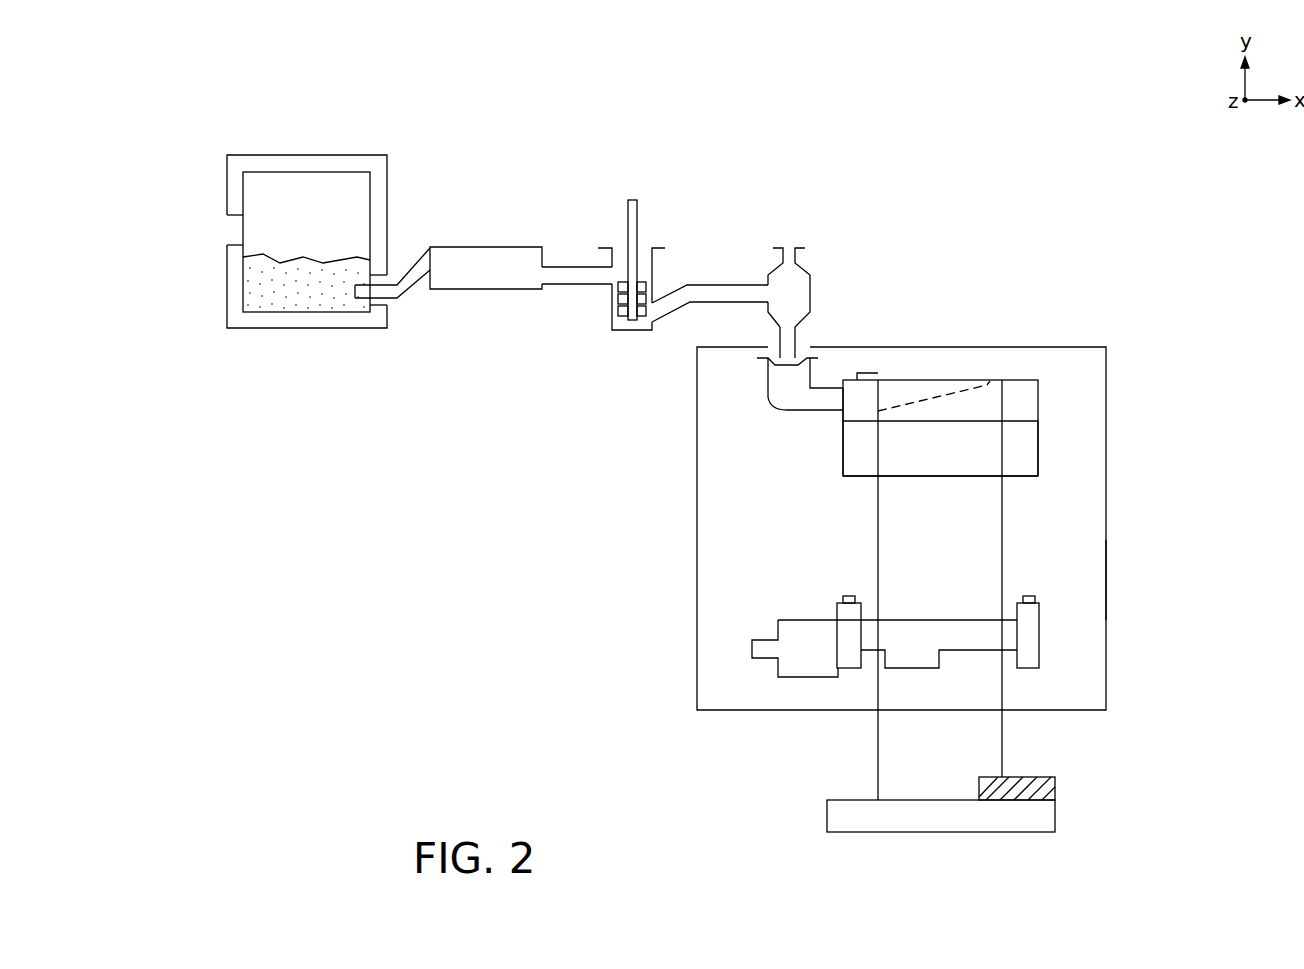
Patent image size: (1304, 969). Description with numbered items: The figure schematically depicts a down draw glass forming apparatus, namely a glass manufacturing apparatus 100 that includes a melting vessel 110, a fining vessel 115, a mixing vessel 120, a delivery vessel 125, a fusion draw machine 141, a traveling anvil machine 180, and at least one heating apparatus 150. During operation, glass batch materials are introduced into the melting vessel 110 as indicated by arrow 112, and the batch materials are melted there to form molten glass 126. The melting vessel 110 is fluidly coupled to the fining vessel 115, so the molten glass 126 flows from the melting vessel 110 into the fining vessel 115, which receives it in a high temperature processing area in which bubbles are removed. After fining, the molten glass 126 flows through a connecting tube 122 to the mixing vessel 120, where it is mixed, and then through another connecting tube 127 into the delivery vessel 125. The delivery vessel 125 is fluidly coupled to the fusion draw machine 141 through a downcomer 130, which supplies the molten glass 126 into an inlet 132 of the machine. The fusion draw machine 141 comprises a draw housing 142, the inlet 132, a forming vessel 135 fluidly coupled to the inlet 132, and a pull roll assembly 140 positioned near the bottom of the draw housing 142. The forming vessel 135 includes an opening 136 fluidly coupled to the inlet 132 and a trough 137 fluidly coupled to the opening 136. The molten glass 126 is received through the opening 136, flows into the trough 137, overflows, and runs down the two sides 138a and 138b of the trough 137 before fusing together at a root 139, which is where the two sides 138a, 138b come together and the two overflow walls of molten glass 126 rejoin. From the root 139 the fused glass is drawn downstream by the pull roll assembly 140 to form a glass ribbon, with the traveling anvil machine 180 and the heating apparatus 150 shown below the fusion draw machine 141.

The glass manufacturing apparatus 100 is at (1125, 184).
The melting vessel 110 is at (227, 181).
The arrow 112 is at (185, 241).
The fining vessel 115 is at (470, 247).
The mixing vessel 120 is at (653, 273).
The connecting tube 122 is at (565, 284).
The delivery vessel 125 is at (811, 290).
The molten glass 126 is at (345, 258).
The connecting tube 127 is at (722, 303).
The downcomer 130 is at (797, 338).
The inlet 132 is at (773, 401).
The forming vessel 135 is at (1038, 397).
The opening 136 is at (843, 414).
The trough 137 is at (943, 388).
The side 138a is at (843, 466).
The side 138b is at (1038, 443).
The root 139 is at (918, 476).
The pull roll assembly 140 is at (1040, 625).
The fusion draw machine 141 is at (968, 511).
The draw housing 142 is at (1106, 582).
The heating apparatus 150 is at (1055, 790).
The traveling anvil machine 180 is at (1055, 818).